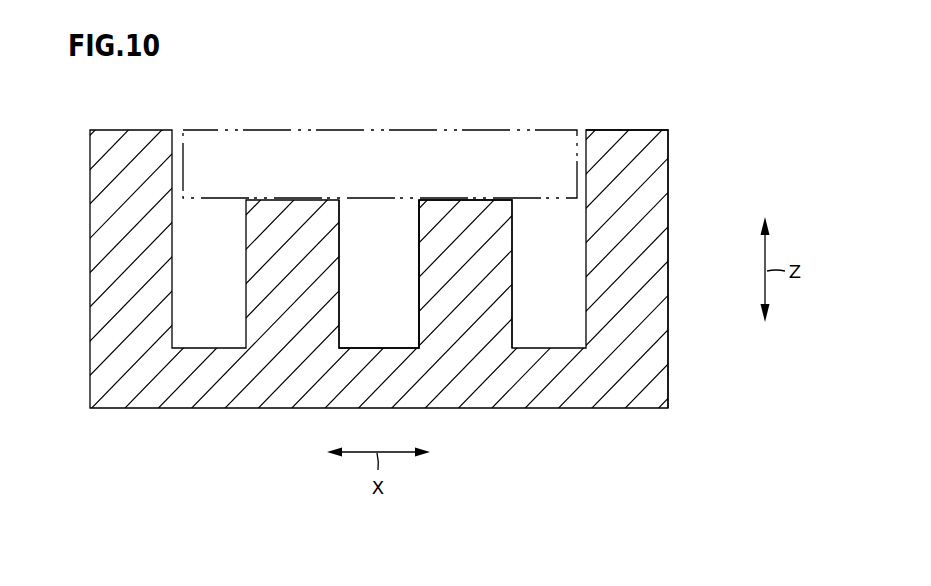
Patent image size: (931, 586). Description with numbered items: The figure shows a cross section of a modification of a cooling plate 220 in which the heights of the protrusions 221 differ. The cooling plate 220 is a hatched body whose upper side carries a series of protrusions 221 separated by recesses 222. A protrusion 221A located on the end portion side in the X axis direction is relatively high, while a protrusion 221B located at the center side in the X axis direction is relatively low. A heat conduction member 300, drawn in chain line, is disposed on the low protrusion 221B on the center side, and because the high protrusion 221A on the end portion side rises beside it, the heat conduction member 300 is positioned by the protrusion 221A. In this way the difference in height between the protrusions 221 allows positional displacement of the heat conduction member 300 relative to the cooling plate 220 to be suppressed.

The cooling plate 220 is at (692, 326).
The protrusions 221 is at (543, 229).
The protrusion located on the end portion side 221A is at (627, 157).
The protrusion located at the center side 221B is at (475, 217).
The recesses 222 is at (342, 262).
The heat conduction member 300 is at (256, 145).